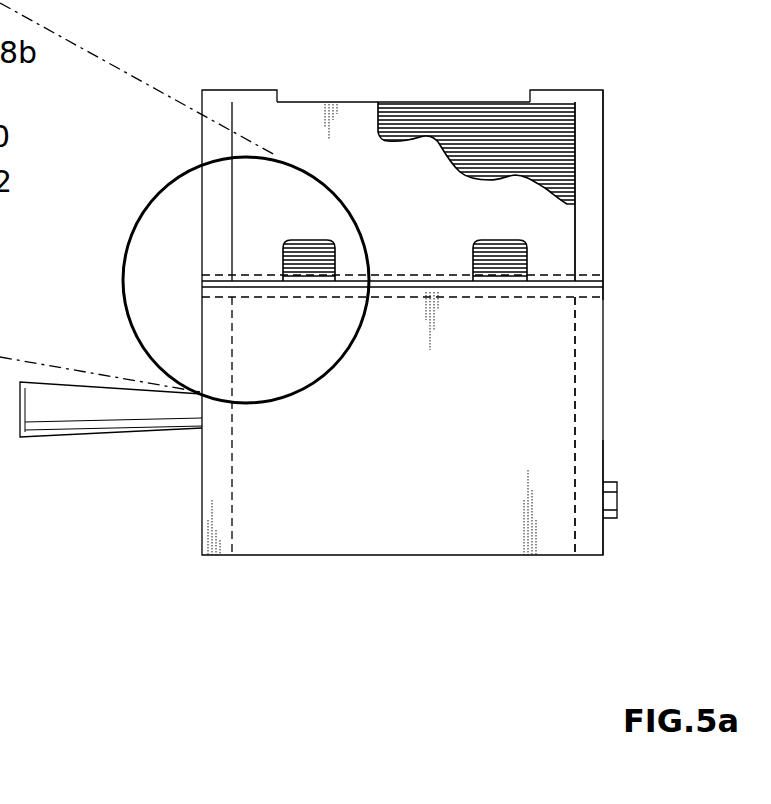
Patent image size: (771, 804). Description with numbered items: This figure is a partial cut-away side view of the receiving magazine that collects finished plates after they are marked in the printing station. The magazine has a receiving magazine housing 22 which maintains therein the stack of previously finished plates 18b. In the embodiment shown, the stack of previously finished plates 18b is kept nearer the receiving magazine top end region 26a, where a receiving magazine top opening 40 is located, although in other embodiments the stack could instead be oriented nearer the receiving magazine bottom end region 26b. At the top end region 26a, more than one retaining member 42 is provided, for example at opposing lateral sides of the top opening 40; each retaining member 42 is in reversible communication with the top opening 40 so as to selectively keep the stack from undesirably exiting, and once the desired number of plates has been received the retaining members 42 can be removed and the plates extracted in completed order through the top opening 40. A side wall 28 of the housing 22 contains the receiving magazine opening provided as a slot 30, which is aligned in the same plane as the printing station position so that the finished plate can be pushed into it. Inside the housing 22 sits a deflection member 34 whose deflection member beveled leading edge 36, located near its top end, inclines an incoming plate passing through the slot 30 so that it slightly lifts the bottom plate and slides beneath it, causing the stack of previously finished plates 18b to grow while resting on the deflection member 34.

The receiving magazine housing 22 is at (603, 462).
The retaining member 42 is at (255, 90).
The receiving magazine top opening 40 is at (405, 74).
The receiving magazine top end region 26a is at (617, 79).
The stack of previously finished plates 18b is at (610, 102).
The slot 30 is at (603, 285).
The deflection member beveled leading edge 36 is at (576, 289).
The deflection member 34 is at (574, 370).
The side wall 28 is at (566, 410).
The receiving magazine bottom end region 26b is at (603, 543).